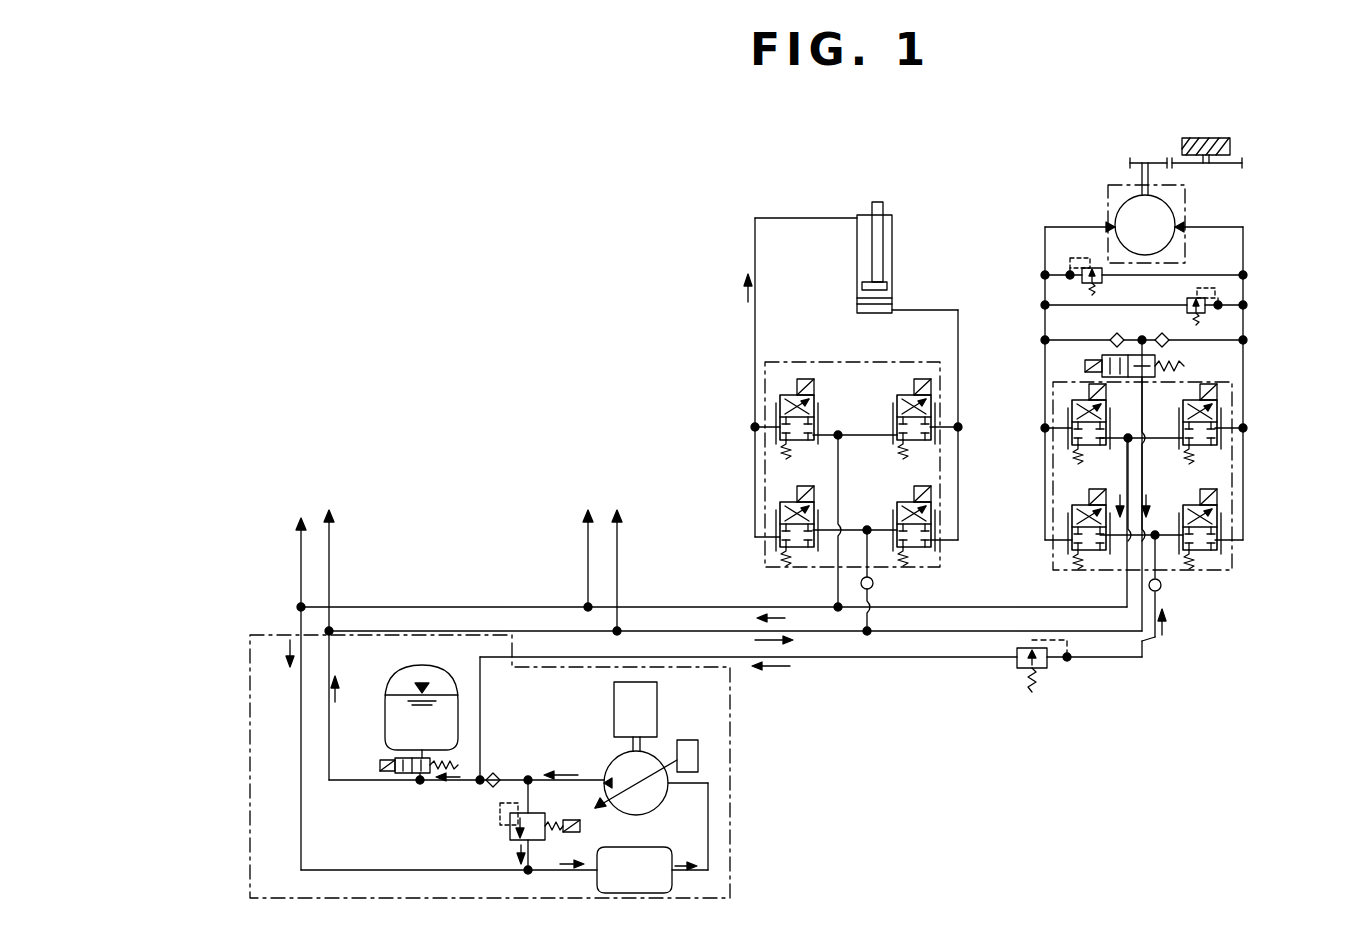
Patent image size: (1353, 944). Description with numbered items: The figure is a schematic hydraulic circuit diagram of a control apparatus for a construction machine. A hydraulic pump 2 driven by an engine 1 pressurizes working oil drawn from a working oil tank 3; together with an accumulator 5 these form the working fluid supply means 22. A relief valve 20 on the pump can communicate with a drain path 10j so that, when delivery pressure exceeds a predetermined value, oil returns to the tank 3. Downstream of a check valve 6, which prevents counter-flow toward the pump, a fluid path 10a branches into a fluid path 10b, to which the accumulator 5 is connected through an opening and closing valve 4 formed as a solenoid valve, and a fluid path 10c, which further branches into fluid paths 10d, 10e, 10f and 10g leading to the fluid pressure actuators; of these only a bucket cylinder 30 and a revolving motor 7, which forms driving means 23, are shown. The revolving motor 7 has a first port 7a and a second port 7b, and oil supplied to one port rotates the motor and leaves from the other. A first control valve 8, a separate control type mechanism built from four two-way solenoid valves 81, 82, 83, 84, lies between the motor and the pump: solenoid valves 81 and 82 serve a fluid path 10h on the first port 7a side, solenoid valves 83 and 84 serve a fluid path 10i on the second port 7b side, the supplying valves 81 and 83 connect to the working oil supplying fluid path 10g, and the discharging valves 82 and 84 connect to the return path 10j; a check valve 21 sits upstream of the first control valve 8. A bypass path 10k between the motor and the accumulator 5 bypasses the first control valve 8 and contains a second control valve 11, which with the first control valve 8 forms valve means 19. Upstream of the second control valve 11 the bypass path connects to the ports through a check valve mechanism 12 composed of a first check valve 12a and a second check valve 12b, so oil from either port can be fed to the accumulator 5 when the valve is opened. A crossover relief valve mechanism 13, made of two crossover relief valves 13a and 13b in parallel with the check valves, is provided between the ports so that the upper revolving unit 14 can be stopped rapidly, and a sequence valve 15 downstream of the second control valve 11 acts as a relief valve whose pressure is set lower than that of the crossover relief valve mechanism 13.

The engine 1 is at (614, 700).
The hydraulic pump 2 is at (612, 760).
The working oil tank 3 is at (650, 847).
The opening and closing valve 4 is at (395, 760).
The accumulator 5 is at (392, 668).
The check valve 6 is at (496, 772).
The revolving motor 7 is at (1128, 210).
The first port 7a is at (1110, 225).
The second port 7b is at (1180, 224).
The first control valve 8 is at (765, 456).
The fluid path 10a is at (448, 782).
The fluid path 10b is at (420, 783).
The fluid path 10c is at (342, 782).
The fluid path 10d is at (329, 555).
The fluid path 10e is at (617, 556).
The fluid path 10f is at (873, 593).
The working oil supplying fluid path 10g is at (1160, 600).
The fluid path 10h is at (1045, 244).
The fluid path 10i is at (1243, 257).
The drain path 10j is at (706, 607).
The bypass path 10k is at (886, 657).
The second control valve 11 is at (1184, 366).
The check valve mechanism 12 is at (1125, 322).
The first check valve 12a is at (1110, 340).
The second check valve 12b is at (1170, 343).
The crossover relief valve mechanism 13 is at (1226, 244).
The crossover relief valve 13a is at (1082, 280).
The crossover relief valve 13b is at (1205, 310).
The upper revolving unit 14 is at (1232, 147).
The sequence valve 15 is at (1017, 668).
The valve means 19 is at (1255, 403).
The relief valve 20 is at (505, 840).
The check valve 21 is at (874, 583).
The working fluid supply means 22 is at (730, 750).
The driving means 23 is at (1115, 185).
The bucket cylinder 30 is at (892, 236).
The solenoid valve 81 is at (780, 522).
The solenoid valve 82 is at (780, 408).
The solenoid valve 83 is at (931, 540).
The solenoid valve 84 is at (931, 437).